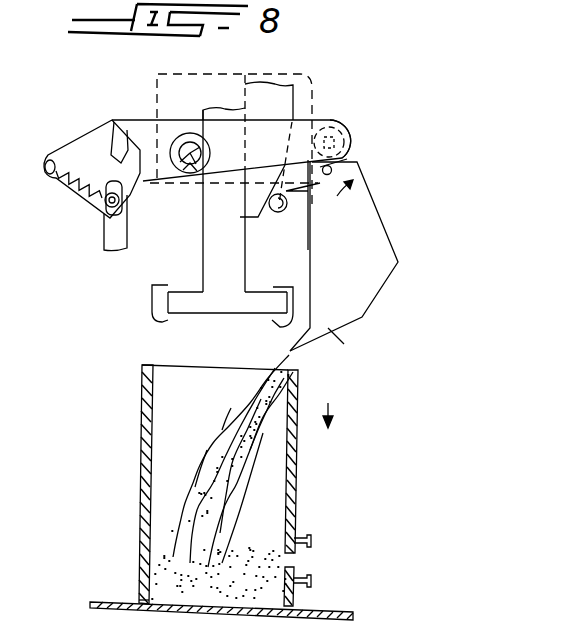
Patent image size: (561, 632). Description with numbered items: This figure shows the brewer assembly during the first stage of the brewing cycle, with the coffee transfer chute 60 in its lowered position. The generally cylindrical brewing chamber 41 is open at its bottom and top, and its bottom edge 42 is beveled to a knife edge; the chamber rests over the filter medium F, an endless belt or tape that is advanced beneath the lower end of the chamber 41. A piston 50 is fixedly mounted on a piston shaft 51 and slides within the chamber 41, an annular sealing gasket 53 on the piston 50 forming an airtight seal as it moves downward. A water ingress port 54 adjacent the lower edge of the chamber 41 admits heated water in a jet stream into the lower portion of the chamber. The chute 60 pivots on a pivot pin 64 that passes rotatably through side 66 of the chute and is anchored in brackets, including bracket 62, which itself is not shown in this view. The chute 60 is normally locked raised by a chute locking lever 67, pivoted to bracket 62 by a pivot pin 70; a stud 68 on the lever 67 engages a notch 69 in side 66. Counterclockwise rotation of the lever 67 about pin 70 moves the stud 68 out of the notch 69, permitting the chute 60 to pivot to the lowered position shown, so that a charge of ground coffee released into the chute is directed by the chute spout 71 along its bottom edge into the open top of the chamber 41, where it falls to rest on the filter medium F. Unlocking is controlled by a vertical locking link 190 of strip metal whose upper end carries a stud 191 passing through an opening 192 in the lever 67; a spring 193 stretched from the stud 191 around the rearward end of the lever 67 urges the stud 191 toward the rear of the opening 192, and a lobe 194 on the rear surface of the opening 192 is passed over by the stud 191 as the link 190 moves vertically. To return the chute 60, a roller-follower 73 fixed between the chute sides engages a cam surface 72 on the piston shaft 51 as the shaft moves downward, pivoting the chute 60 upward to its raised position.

The brewing chamber 41 is at (142, 447).
The bottom edge 42 is at (139, 603).
The piston 50 is at (217, 305).
The piston shaft 51 is at (203, 231).
The annular sealing gasket 53 is at (153, 318).
The water ingress port 54 is at (300, 558).
The coffee transfer chute 60 is at (346, 194).
The bracket 62 is at (157, 74).
The pivot pin 64 is at (328, 175).
The side of chute 66 is at (375, 237).
The chute locking lever 67 is at (345, 133).
The stud 68 is at (322, 130).
The notch 69 is at (347, 160).
The pivot pin 70 is at (188, 151).
The chute spout 71 is at (351, 345).
The cam surface 72 is at (283, 113).
The roller-follower 73 is at (302, 207).
The vertical locking link 190 is at (108, 235).
The stud 191 is at (110, 204).
The opening 192 is at (124, 122).
The spring 193 is at (98, 198).
The lobe 194 is at (113, 159).
The filter medium F is at (315, 610).